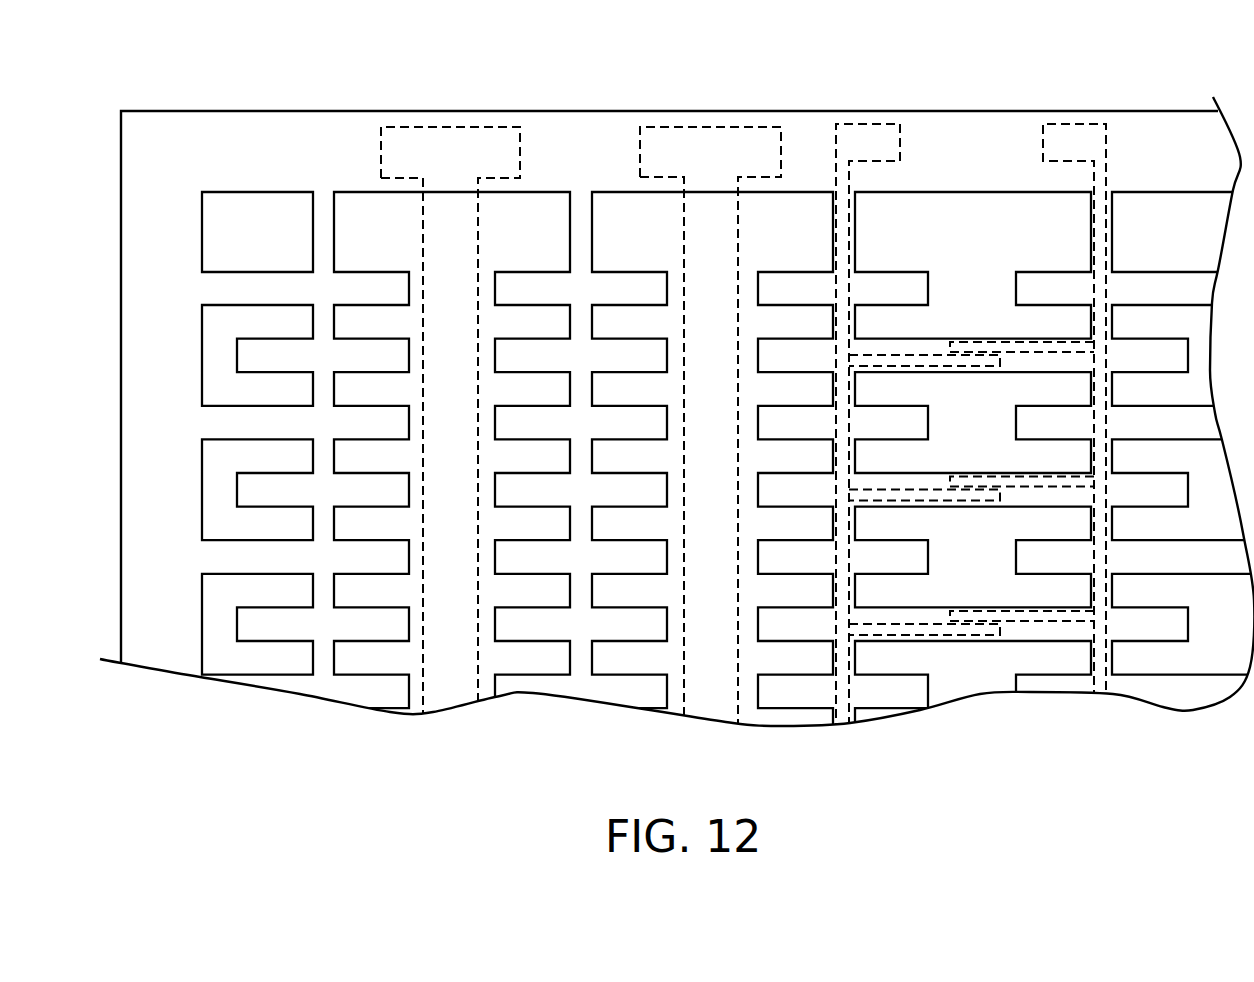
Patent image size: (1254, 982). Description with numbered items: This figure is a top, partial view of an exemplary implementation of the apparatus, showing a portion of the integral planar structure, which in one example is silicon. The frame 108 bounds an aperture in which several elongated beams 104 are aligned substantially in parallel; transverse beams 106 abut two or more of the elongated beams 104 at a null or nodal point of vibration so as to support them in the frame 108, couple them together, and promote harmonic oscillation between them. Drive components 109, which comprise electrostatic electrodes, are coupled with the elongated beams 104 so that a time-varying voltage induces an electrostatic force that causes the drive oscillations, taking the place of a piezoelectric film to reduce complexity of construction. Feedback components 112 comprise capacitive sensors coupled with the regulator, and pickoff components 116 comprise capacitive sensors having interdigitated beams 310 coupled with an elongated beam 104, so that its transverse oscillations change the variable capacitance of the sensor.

The elongated beam 104 is at (950, 472).
The transverse beam 106 is at (1114, 454).
The frame 108 is at (948, 111).
The drive component 109 is at (450, 127).
The feedback component 112 is at (710, 127).
The pickoff component 116 is at (868, 124).
The interdigitated beams 310 is at (980, 500).